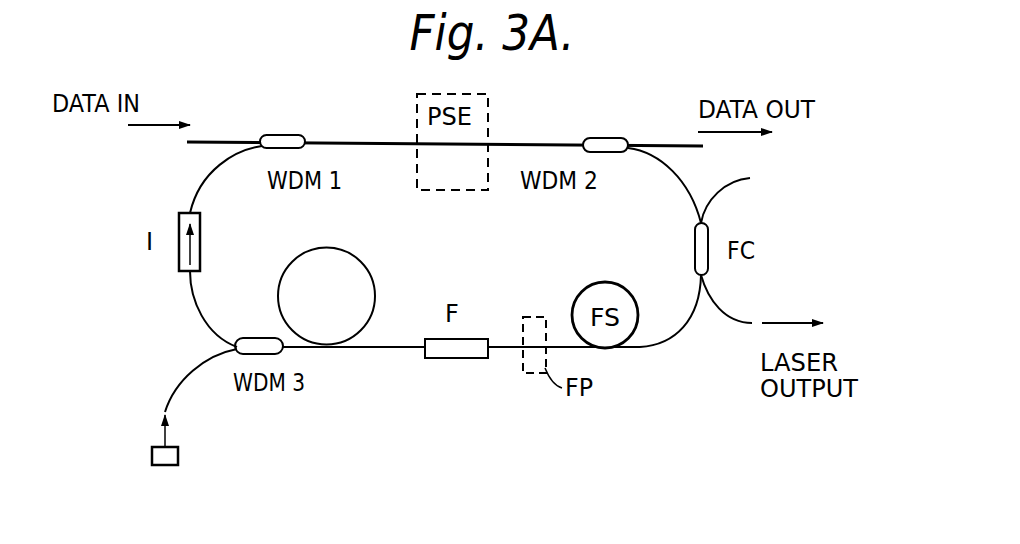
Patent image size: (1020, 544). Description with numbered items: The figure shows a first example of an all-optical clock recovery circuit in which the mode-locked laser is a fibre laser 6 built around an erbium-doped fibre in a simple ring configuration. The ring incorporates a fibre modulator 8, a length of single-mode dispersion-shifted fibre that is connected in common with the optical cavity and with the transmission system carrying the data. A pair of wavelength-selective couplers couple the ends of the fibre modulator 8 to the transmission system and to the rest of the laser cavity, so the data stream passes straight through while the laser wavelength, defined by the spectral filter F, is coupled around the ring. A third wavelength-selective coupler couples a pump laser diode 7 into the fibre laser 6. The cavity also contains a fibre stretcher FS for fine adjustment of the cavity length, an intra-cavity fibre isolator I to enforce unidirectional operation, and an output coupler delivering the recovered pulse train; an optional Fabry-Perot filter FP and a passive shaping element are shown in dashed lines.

The fibre laser 6 is at (364, 262).
The laser diode 7 is at (178, 455).
The fibre modulator 8 is at (532, 143).